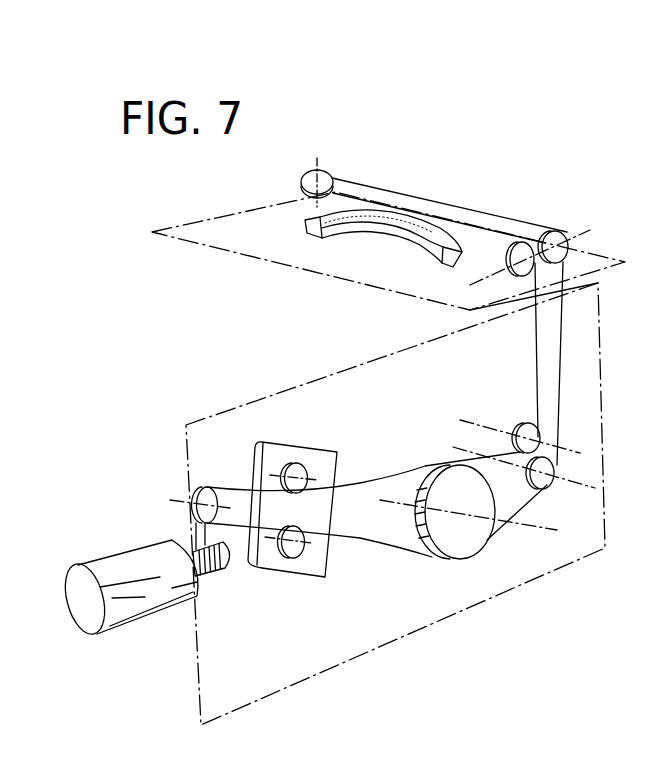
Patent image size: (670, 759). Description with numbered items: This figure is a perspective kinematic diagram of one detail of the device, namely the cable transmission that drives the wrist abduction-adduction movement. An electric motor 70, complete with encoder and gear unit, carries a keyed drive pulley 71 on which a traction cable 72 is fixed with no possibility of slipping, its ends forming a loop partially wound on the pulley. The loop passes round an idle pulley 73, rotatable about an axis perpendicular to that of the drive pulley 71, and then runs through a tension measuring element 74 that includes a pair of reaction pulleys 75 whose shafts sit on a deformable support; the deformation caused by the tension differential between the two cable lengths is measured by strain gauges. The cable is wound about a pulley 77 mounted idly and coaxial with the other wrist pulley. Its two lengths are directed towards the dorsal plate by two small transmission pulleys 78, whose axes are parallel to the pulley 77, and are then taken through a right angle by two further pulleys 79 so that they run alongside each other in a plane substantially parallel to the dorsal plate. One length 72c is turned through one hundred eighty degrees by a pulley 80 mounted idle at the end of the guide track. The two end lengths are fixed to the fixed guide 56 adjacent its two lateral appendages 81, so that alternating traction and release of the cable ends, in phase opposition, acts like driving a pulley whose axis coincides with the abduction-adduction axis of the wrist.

The fixed guide 56 is at (360, 247).
The electric motor 70 is at (127, 608).
The drive pulley 71 is at (223, 578).
The traction cable 72 is at (190, 533).
The length of traction cable 72c is at (444, 200).
The idle pulley 73 is at (210, 492).
The tension measuring element 74 is at (308, 565).
The reaction pulley 75 is at (302, 466).
The pulley 77 is at (468, 546).
The transmission pulley 78 is at (525, 425).
The pulley 79 is at (552, 232).
The pulley 80 is at (303, 186).
The lateral appendage 81 is at (313, 228).